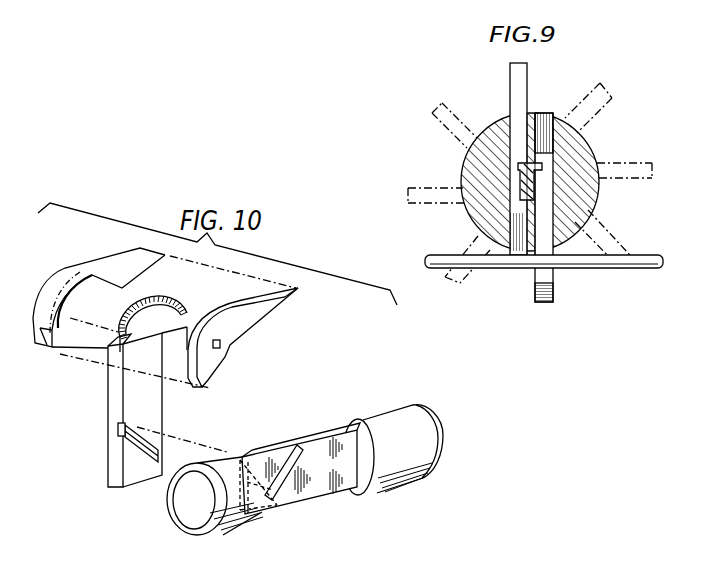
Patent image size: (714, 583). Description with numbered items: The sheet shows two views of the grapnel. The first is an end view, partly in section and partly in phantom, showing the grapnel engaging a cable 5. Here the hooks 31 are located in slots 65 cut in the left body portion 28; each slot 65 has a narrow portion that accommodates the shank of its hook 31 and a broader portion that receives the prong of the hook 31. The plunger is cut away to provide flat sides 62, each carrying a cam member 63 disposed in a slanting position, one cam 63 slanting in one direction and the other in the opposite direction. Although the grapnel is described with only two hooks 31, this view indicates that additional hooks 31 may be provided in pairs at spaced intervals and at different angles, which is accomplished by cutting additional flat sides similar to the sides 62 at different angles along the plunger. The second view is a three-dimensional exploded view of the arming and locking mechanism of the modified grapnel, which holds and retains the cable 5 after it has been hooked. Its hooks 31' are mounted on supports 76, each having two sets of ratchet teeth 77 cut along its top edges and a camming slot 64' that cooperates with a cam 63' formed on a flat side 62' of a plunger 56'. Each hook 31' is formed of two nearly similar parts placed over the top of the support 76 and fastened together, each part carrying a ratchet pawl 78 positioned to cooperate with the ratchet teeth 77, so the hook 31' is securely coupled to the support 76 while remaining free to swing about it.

In FIG. 9, the cable 5 is at (633, 268).
In FIG. 9, the left body portion 28 is at (477, 211).
In FIG. 9, the hook 31 is at (525, 182).
In FIG. 9, the flat side 62 is at (581, 184).
In FIG. 9, the cam member 63 is at (580, 192).
In FIG. 9, the slot 65 is at (543, 115).
In FIG. 10, the hook 31' is at (215, 295).
In FIG. 10, the plunger 56' is at (414, 450).
In FIG. 10, the flat side 62' is at (248, 479).
In FIG. 10, the cam 63' is at (274, 456).
In FIG. 10, the camming slot 64' is at (107, 441).
In FIG. 10, the support 76 is at (112, 467).
In FIG. 10, the ratchet teeth 77 is at (143, 293).
In FIG. 10, the ratchet pawl 78 is at (220, 343).